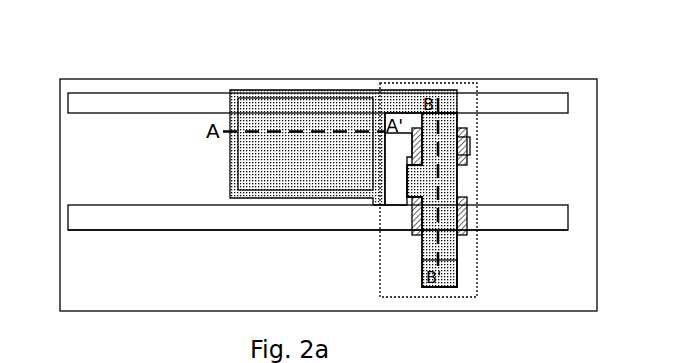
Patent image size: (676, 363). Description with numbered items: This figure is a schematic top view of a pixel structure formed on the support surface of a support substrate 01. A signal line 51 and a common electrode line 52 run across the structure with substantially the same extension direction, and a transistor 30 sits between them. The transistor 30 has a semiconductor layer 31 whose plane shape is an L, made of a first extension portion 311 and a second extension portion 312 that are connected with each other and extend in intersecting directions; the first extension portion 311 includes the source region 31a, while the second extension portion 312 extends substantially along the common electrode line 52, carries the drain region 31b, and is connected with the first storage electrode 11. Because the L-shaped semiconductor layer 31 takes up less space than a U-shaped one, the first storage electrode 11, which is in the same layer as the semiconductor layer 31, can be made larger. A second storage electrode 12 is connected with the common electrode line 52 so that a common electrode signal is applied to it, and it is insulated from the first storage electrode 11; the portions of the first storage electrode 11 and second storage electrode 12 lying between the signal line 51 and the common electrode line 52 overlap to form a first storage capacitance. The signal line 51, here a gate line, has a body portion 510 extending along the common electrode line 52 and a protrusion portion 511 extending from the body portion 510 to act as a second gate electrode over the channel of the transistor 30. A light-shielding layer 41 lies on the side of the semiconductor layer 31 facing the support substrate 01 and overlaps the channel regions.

The support substrate 01 is at (302, 78).
The first storage electrode 11 is at (230, 190).
The second storage electrode 12 is at (238, 172).
The transistor 30 is at (480, 83).
The semiconductor layer 31 is at (553, 157).
The source region 31a is at (450, 262).
The drain region 31b is at (447, 121).
The first extension portion 311 is at (460, 253).
The second extension portion 312 is at (400, 119).
The light-shielding layer 41 is at (467, 235).
The signal line 51 is at (107, 230).
The common electrode line 52 is at (115, 105).
The body portion 510 is at (235, 228).
The protrusion portion 511 is at (397, 175).